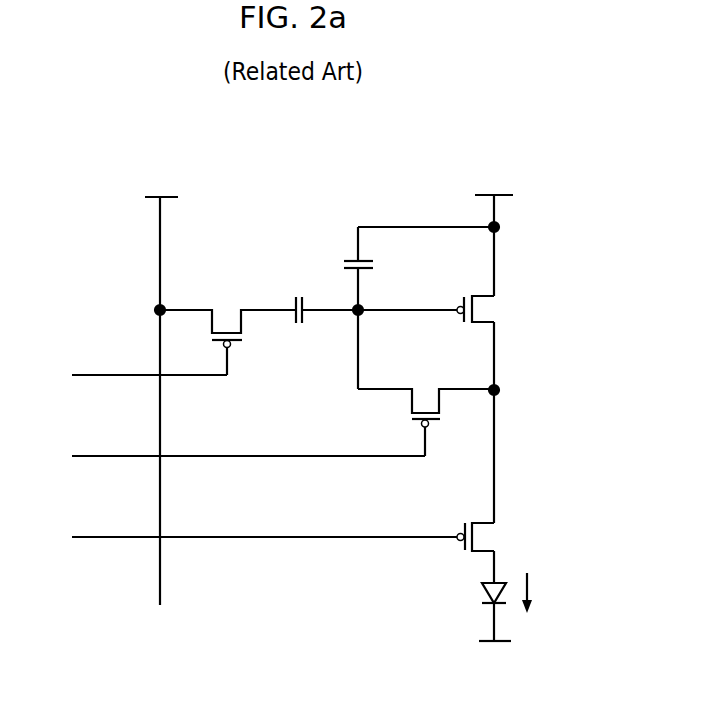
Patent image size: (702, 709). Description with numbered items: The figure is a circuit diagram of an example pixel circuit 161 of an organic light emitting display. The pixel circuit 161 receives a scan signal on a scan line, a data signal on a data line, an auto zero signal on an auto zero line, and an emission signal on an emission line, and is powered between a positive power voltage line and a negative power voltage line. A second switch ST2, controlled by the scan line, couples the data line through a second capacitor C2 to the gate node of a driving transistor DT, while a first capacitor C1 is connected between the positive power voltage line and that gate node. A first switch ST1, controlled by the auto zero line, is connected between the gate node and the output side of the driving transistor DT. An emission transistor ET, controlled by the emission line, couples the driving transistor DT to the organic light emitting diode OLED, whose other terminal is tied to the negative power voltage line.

The pixel circuit 161 is at (320, 163).
The second switch ST2 is at (228, 329).
The first switch ST1 is at (426, 410).
The first capacitor C1 is at (372, 308).
The second capacitor C2 is at (323, 298).
The driving transistor DT is at (440, 309).
The emission transistor ET is at (489, 537).
The organic light emitting diode OLED is at (470, 595).